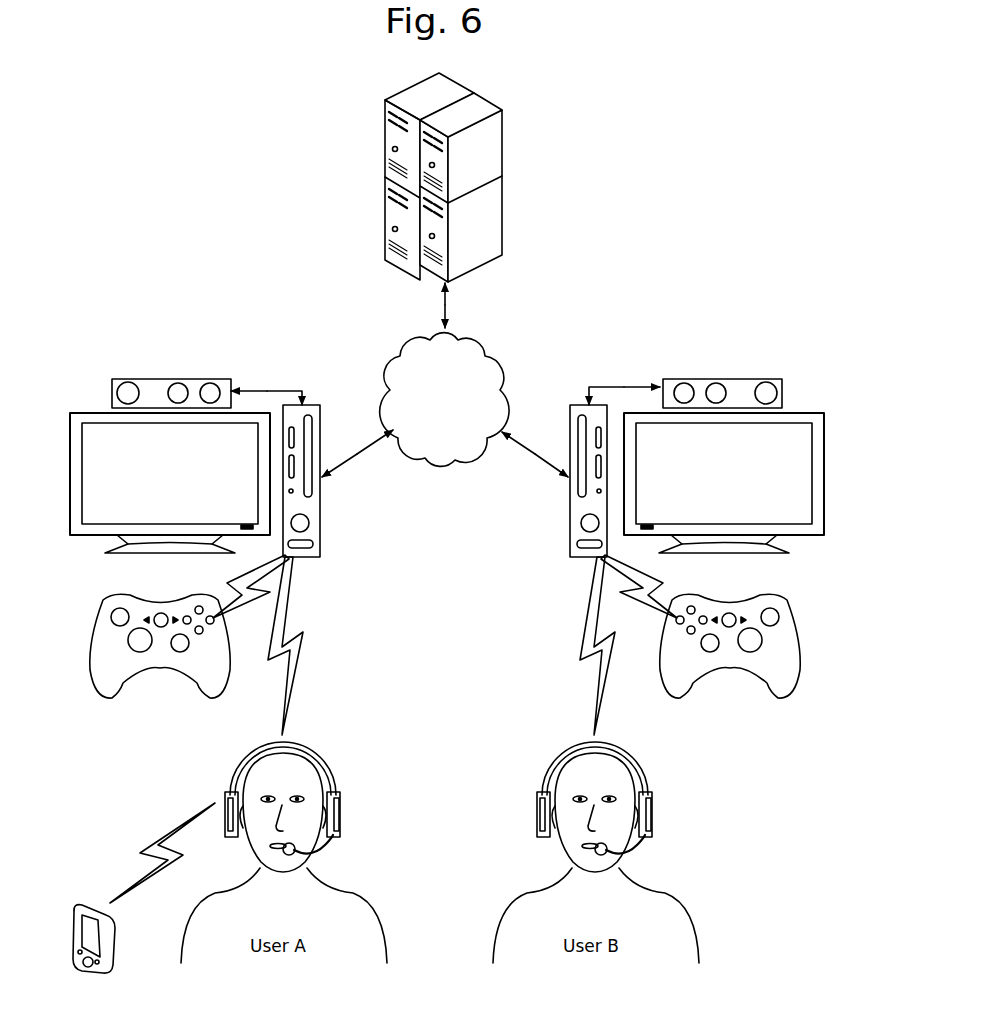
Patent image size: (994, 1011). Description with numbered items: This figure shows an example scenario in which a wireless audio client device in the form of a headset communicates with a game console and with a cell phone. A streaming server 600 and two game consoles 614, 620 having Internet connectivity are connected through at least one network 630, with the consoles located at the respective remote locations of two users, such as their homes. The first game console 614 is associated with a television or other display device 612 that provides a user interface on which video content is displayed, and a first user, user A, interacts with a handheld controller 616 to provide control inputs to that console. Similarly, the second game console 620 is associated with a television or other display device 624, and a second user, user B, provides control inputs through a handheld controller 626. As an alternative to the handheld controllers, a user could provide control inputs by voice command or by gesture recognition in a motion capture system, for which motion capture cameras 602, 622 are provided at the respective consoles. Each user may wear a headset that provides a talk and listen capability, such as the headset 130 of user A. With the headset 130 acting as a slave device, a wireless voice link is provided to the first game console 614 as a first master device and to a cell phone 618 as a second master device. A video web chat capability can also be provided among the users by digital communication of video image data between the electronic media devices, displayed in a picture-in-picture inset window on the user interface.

The streaming server 600 is at (385, 102).
The network 630 is at (444, 400).
The motion capture camera 602 is at (115, 378).
The television or other display device 612 is at (71, 478).
The first game console 614 is at (311, 405).
The handheld controller 616 is at (106, 604).
The cell phone 618 is at (82, 900).
The headset 130 is at (325, 742).
The second game console 620 is at (577, 405).
The motion capture camera 622 is at (783, 386).
The television or other display device 624 is at (822, 477).
The handheld controller 626 is at (773, 596).